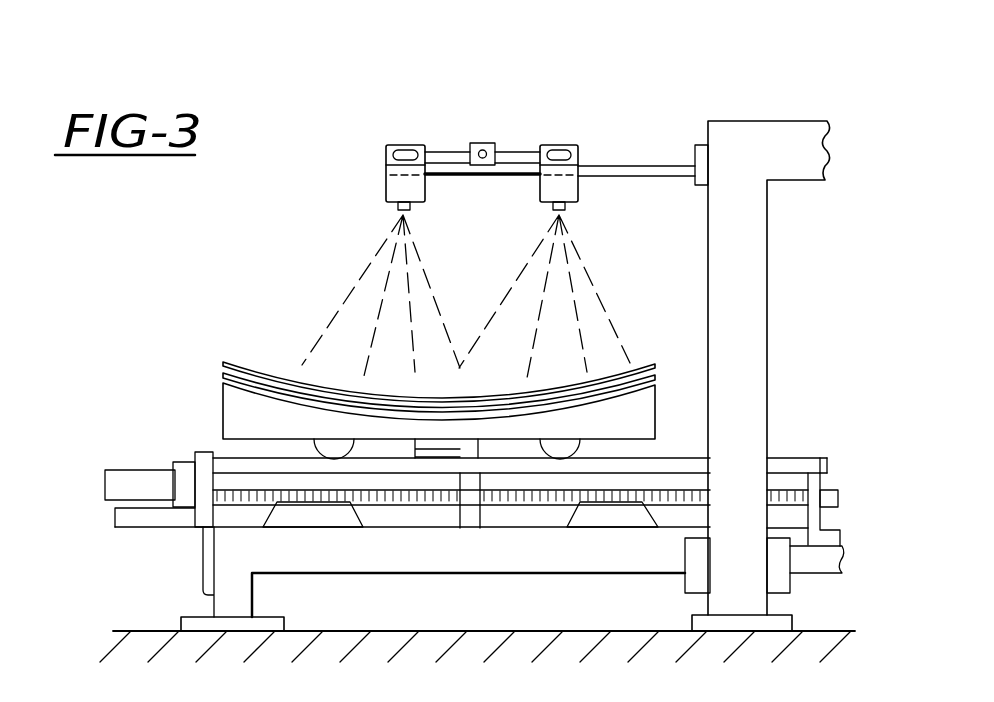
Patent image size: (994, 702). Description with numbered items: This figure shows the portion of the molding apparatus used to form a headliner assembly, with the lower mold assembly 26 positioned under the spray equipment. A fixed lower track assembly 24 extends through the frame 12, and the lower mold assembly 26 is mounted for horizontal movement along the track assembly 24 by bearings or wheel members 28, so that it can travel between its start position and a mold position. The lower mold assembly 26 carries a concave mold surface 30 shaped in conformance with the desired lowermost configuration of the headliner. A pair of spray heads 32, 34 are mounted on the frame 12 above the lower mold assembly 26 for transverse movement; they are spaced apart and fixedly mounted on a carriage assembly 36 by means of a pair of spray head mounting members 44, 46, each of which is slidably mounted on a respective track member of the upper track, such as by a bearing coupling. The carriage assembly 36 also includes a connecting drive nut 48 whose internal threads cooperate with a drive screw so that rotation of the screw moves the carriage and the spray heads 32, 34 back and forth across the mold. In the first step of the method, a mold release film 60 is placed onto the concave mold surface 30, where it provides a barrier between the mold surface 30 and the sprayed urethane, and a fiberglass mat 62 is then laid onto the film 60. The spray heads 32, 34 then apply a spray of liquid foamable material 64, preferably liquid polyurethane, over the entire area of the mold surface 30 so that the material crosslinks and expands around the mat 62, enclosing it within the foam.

The frame 12 is at (732, 122).
The lower track assembly 24 is at (227, 458).
The lower mold assembly 26 is at (655, 405).
The wheel members 28 is at (333, 450).
The concave mold surface 30 is at (265, 396).
The spray head 32 is at (387, 193).
The spray head 34 is at (580, 195).
The carriage assembly 36 is at (522, 148).
The spray head mounting member 44 is at (398, 150).
The spray head mounting member 46 is at (568, 148).
The connecting drive nut 48 is at (485, 143).
The mold release film 60 is at (223, 375).
The fiberglass mat 62 is at (233, 358).
The liquid foamable material 64 is at (363, 268).